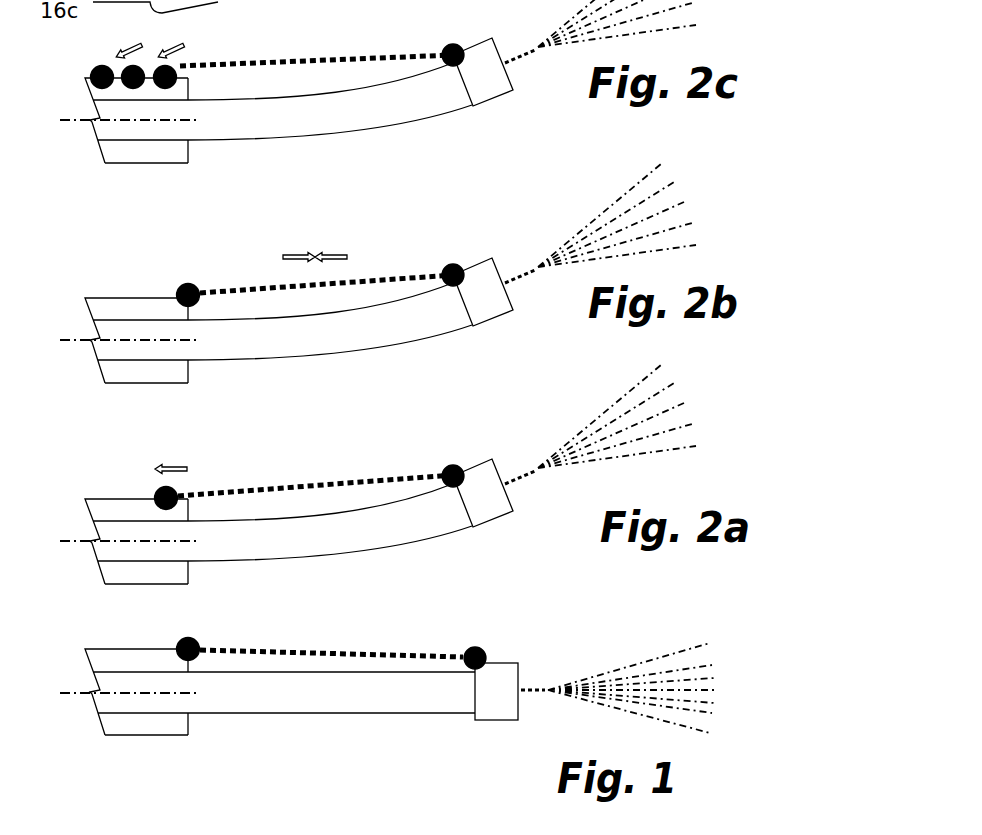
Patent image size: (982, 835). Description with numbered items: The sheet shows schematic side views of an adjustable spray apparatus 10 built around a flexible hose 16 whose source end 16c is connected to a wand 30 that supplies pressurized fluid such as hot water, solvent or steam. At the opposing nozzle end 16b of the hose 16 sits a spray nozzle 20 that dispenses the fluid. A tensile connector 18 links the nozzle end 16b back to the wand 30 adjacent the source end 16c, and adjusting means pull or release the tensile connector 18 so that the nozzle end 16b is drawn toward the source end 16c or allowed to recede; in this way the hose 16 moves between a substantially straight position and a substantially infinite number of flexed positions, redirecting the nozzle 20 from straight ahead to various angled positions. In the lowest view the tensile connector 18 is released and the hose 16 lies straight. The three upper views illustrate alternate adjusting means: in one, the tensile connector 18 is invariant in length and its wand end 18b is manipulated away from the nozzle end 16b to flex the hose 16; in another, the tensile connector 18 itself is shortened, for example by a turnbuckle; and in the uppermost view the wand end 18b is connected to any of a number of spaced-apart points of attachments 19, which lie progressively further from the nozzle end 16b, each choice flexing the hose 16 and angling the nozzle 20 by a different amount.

In FIG. 2C, the adjustable spray apparatus 10 is at (368, 117).
In FIG. 2B, the adjustable spray apparatus 10 is at (374, 309).
In FIG. 2A, the adjustable spray apparatus 10 is at (374, 505).
In FIG. 1, the adjustable spray apparatus 10 is at (383, 718).
In FIG. 2C, the flexible hose 16 is at (347, 133).
In FIG. 2B, the flexible hose 16 is at (330, 338).
In FIG. 2A, the flexible hose 16 is at (330, 539).
In FIG. 1, the flexible hose 16 is at (303, 712).
In FIG. 2C, the nozzle end 16b is at (450, 113).
In FIG. 2B, the nozzle end 16b is at (469, 318).
In FIG. 2A, the nozzle end 16b is at (469, 519).
In FIG. 1, the nozzle end 16b is at (447, 712).
In FIG. 2C, the source end 16c is at (92, 132).
In FIG. 2B, the source end 16c is at (124, 353).
In FIG. 2A, the source end 16c is at (124, 554).
In FIG. 1, the source end 16c is at (92, 705).
In FIG. 2C, the tensile connector 18 is at (340, 58).
In FIG. 2B, the tensile connector 18 is at (326, 271).
In FIG. 2A, the tensile connector 18 is at (315, 473).
In FIG. 1, the tensile connector 18 is at (360, 653).
In FIG. 2B, the wand end 18b is at (215, 280).
In FIG. 2A, the wand end 18b is at (122, 486).
In FIG. 1, the wand end 18b is at (188, 649).
In FIG. 2C, the points of attachments 19 is at (92, 70).
In FIG. 2C, the spray nozzle 20 is at (505, 95).
In FIG. 2B, the spray nozzle 20 is at (574, 258).
In FIG. 2A, the spray nozzle 20 is at (574, 459).
In FIG. 1, the spray nozzle 20 is at (512, 720).
In FIG. 2C, the wand 30 is at (117, 163).
In FIG. 2B, the wand 30 is at (146, 418).
In FIG. 2A, the wand 30 is at (146, 614).
In FIG. 1, the wand 30 is at (120, 735).